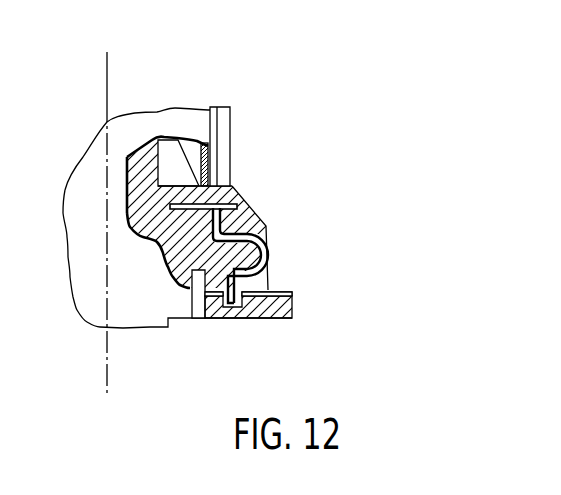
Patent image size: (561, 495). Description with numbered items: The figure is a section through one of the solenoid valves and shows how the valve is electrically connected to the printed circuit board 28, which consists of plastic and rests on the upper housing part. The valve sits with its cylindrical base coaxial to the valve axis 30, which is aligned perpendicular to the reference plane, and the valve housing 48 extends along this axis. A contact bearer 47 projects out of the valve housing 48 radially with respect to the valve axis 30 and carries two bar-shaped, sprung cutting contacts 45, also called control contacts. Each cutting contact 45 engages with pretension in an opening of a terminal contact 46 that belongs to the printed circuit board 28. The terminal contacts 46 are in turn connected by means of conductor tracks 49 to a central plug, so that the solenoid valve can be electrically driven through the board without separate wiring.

The valve axis 30 is at (107, 68).
The valve housing 48 is at (230, 121).
The contact bearer 47 is at (243, 195).
The cutting contact 45 is at (258, 228).
The terminal contact 46 is at (188, 285).
The conductor track 49 is at (280, 292).
The printed circuit board 28 is at (237, 319).